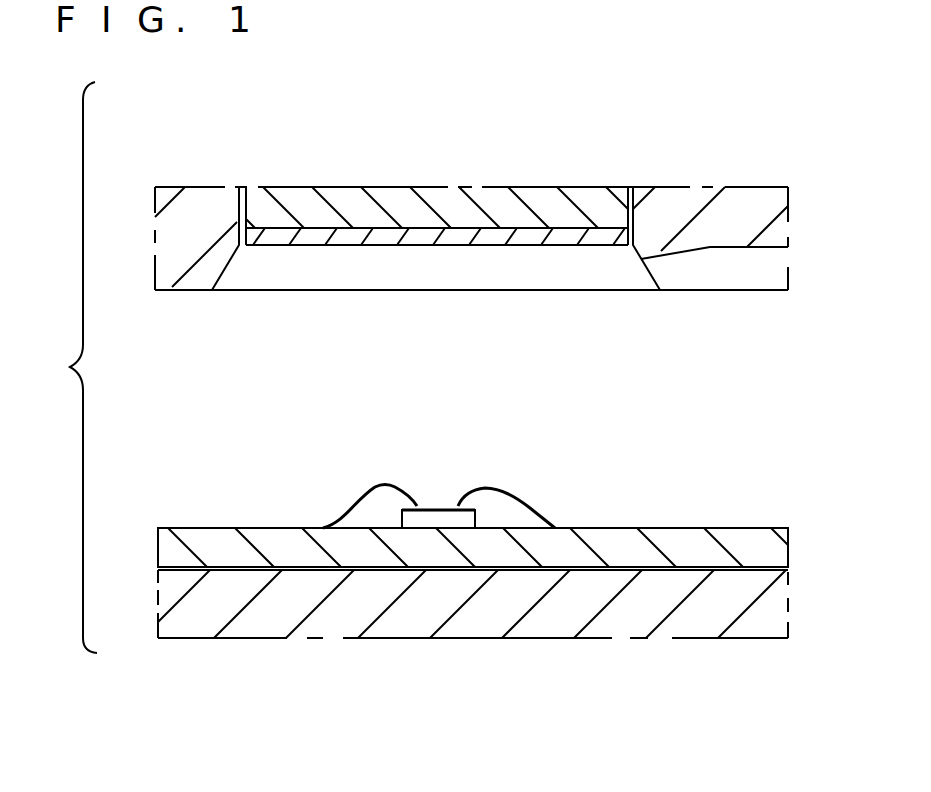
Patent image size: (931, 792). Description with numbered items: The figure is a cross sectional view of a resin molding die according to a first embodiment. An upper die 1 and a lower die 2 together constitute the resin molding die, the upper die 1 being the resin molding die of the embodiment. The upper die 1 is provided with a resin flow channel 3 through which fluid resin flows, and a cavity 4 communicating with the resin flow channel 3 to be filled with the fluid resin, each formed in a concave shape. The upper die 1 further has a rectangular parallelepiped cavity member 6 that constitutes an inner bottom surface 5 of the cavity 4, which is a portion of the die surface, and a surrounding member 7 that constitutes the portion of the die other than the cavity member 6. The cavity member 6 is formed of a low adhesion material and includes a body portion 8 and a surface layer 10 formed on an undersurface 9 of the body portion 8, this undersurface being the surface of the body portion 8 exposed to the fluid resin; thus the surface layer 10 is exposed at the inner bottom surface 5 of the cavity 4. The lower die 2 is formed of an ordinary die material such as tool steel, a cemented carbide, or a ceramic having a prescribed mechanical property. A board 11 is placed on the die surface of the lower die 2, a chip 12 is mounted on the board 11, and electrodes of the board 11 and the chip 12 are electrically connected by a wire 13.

The upper die 1 is at (638, 127).
The lower die 2 is at (770, 708).
The resin flow channel 3 is at (718, 265).
The cavity 4 is at (585, 265).
The inner bottom surface 5 is at (482, 245).
The cavity member 6 is at (515, 172).
The surrounding member 7 is at (189, 232).
The body portion 8 is at (303, 203).
The undersurface 9 is at (415, 242).
The surface layer 10 is at (375, 237).
The board 11 is at (740, 548).
The chip 12 is at (437, 517).
The wire 13 is at (360, 505).